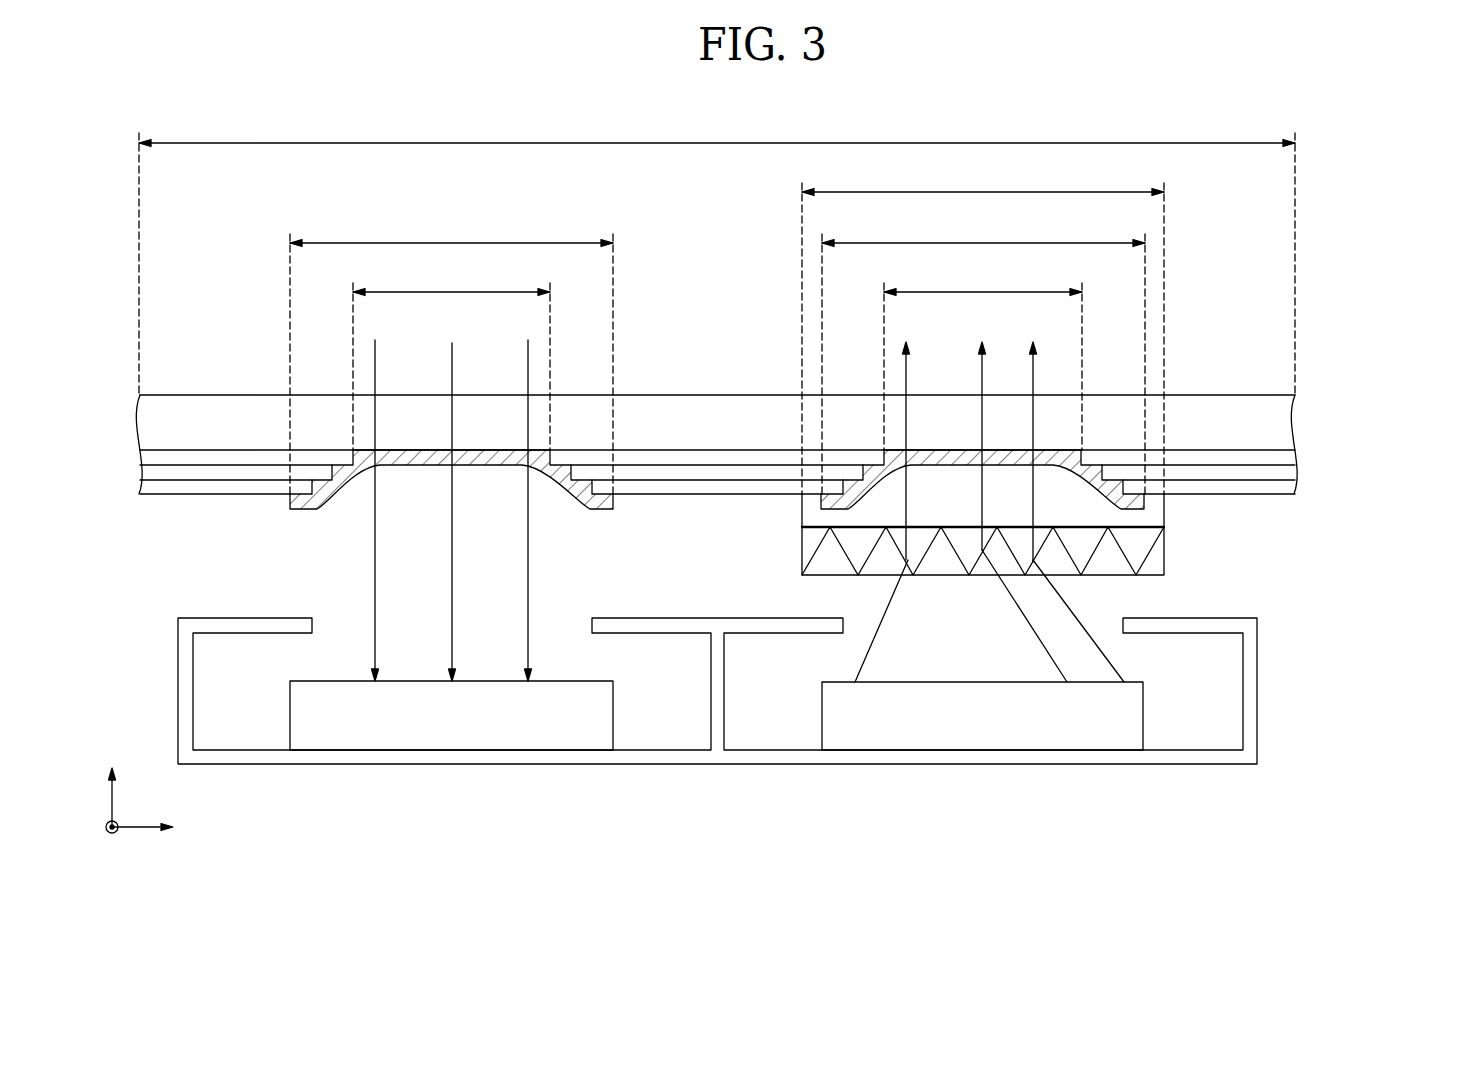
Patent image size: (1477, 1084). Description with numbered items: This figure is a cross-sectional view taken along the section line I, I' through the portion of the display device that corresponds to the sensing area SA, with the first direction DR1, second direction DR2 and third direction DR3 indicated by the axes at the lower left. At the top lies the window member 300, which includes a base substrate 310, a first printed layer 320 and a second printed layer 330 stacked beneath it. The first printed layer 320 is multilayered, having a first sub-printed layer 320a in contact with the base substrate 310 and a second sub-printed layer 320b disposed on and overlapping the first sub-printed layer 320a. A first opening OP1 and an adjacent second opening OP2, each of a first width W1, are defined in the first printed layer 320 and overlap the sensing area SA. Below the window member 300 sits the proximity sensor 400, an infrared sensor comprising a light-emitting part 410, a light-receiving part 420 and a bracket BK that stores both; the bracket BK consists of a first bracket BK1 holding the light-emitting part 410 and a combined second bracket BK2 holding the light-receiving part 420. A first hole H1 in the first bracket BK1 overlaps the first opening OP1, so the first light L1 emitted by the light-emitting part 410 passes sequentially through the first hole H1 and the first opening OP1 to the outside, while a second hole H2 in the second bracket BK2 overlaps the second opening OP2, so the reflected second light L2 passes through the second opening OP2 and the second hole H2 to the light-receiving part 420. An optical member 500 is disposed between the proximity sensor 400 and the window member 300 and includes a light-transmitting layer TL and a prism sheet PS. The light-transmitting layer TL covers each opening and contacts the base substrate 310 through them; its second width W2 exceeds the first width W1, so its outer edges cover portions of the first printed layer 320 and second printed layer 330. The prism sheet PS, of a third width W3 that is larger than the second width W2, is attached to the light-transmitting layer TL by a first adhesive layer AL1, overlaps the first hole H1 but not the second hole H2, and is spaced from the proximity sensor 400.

The sensing area SA is at (717, 255).
The first width W1 is at (717, 357).
The second width W2 is at (717, 355).
The third width W3 is at (983, 329).
The first light L1 is at (989, 498).
The second light L2 is at (452, 498).
The first opening OP1 is at (960, 449).
The second opening OP2 is at (430, 449).
The window member 300 is at (794, 410).
The base substrate 310 is at (1284, 426).
The first printed layer 320 is at (796, 455).
The first sub-printed layer 320a is at (1290, 456).
The second sub-printed layer 320b is at (1290, 473).
The second printed layer 330 is at (1290, 487).
The light-transmitting layer TL is at (290, 497).
The first adhesive layer AL1 is at (1157, 515).
The prism sheet PS is at (1157, 555).
The optical member 500 is at (1054, 534).
The proximity sensor 400 is at (774, 710).
The bracket BK is at (1190, 767).
The first bracket BK1 is at (920, 758).
The second bracket BK2 is at (388, 758).
The first hole H1 is at (1102, 620).
The second hole H2 is at (343, 620).
The light-emitting part 410 is at (988, 730).
The light-receiving part 420 is at (457, 730).
The first direction DR1 is at (163, 827).
The second direction DR2 is at (113, 842).
The third direction DR3 is at (113, 783).
The section line end I is at (116, 392).
The section line end I' is at (1313, 392).